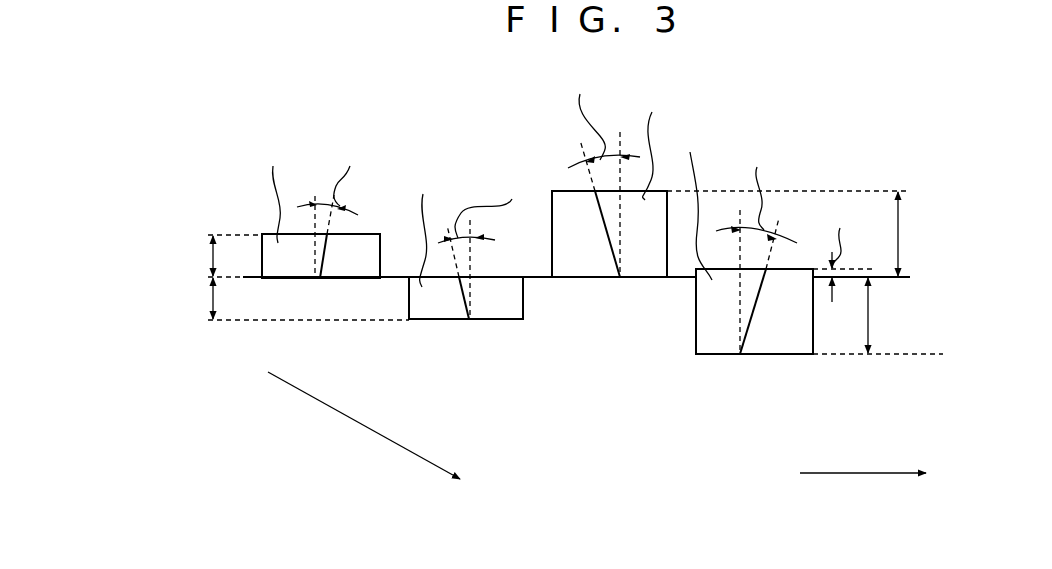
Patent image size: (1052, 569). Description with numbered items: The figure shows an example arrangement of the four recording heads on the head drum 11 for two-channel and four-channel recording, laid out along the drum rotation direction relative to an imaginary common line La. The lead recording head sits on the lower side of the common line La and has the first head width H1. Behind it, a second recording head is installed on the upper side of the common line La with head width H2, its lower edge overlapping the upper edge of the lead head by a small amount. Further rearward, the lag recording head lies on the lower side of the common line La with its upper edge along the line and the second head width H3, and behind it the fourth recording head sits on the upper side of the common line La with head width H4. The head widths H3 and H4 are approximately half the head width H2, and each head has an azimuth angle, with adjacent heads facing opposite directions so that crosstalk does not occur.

The head drum 11 is at (312, 99).
The common imaginary line La is at (535, 278).
The head width of lead recording head W1+ H1 is at (867, 315).
The head width of recording head W2− H2 is at (911, 234).
The head width of lag recording head W1− H3 is at (213, 296).
The head width of recording head W2+ H4 is at (213, 255).